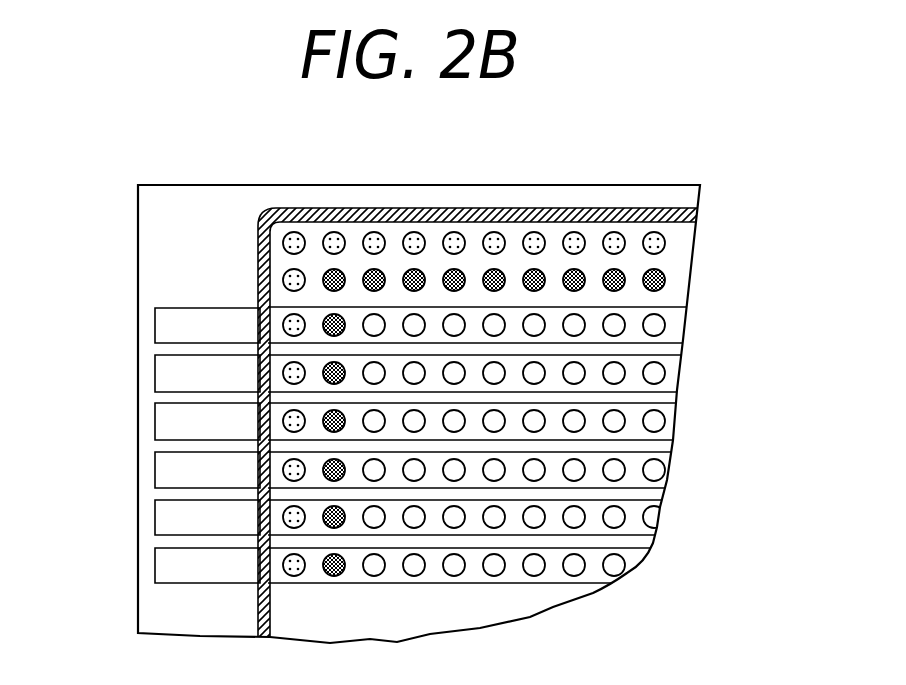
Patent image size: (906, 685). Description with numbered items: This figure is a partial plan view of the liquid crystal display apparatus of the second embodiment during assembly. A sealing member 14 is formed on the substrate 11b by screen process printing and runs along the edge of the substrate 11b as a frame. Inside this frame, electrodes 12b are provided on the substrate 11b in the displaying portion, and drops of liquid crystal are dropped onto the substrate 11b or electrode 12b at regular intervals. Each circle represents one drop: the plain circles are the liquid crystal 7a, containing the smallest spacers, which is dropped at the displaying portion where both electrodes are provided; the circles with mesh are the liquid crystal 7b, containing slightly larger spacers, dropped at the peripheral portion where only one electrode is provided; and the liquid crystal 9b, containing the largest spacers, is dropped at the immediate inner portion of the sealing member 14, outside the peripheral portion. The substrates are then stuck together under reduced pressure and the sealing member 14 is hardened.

The substrate 11b is at (192, 199).
The sealing member 14 is at (315, 209).
The electrode 12b is at (165, 324).
The liquid crystal 9b is at (668, 241).
The liquid crystal 7b is at (668, 276).
The liquid crystal 7a is at (668, 323).